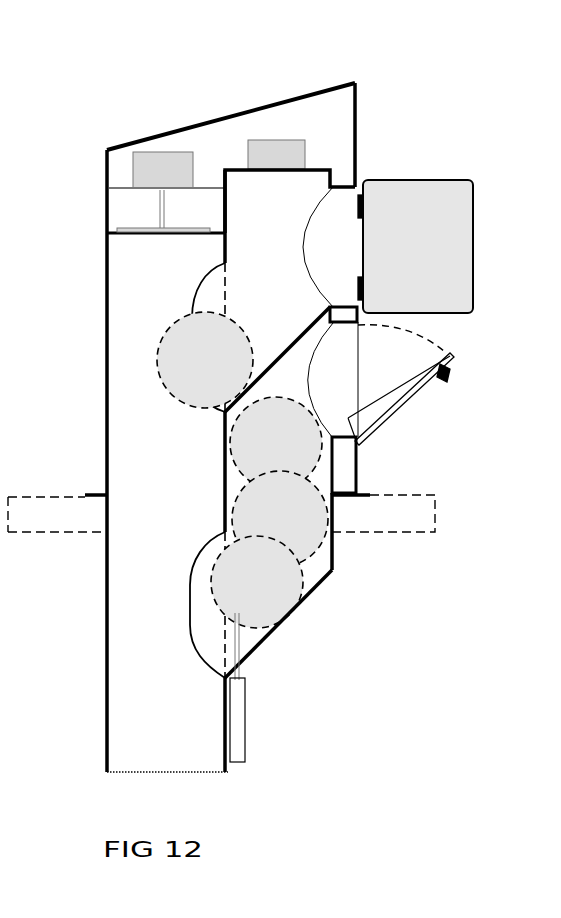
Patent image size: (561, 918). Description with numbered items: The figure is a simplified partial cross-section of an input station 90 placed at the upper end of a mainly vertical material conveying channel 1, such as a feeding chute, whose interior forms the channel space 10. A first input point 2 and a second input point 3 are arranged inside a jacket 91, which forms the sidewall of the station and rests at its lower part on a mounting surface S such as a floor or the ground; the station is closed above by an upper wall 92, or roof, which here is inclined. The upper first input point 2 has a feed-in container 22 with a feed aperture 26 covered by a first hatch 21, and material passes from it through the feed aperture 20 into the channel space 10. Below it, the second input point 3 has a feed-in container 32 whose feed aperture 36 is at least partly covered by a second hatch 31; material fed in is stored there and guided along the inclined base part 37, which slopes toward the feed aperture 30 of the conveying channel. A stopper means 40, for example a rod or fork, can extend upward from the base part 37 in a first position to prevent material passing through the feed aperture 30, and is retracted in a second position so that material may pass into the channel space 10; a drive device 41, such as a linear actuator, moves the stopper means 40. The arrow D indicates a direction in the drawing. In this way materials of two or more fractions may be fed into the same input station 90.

The material conveying channel 1 is at (95, 281).
The first input point 2 is at (502, 180).
The second input point 3 is at (484, 361).
The channel space 10 is at (110, 335).
The feed aperture of the first input point 20 is at (220, 327).
The first hatch 21 is at (457, 271).
The feed-in container of the first input point 22 is at (297, 183).
The feed aperture of the feed-in container 26 is at (352, 231).
The feed aperture of the second input point 30 is at (216, 551).
The second hatch 31 is at (392, 414).
The feed-in container of the second input point 32 is at (327, 569).
The feed aperture of the feed-in container 36 is at (355, 366).
The base part of the feed-in container 37 is at (308, 603).
The stopper means 40 is at (238, 646).
The drive device 41 is at (238, 690).
The input station 90 is at (337, 52).
The jacket 91 is at (358, 95).
The upper wall 92 is at (234, 114).
The direction D is at (497, 305).
The mounting surface S is at (30, 497).